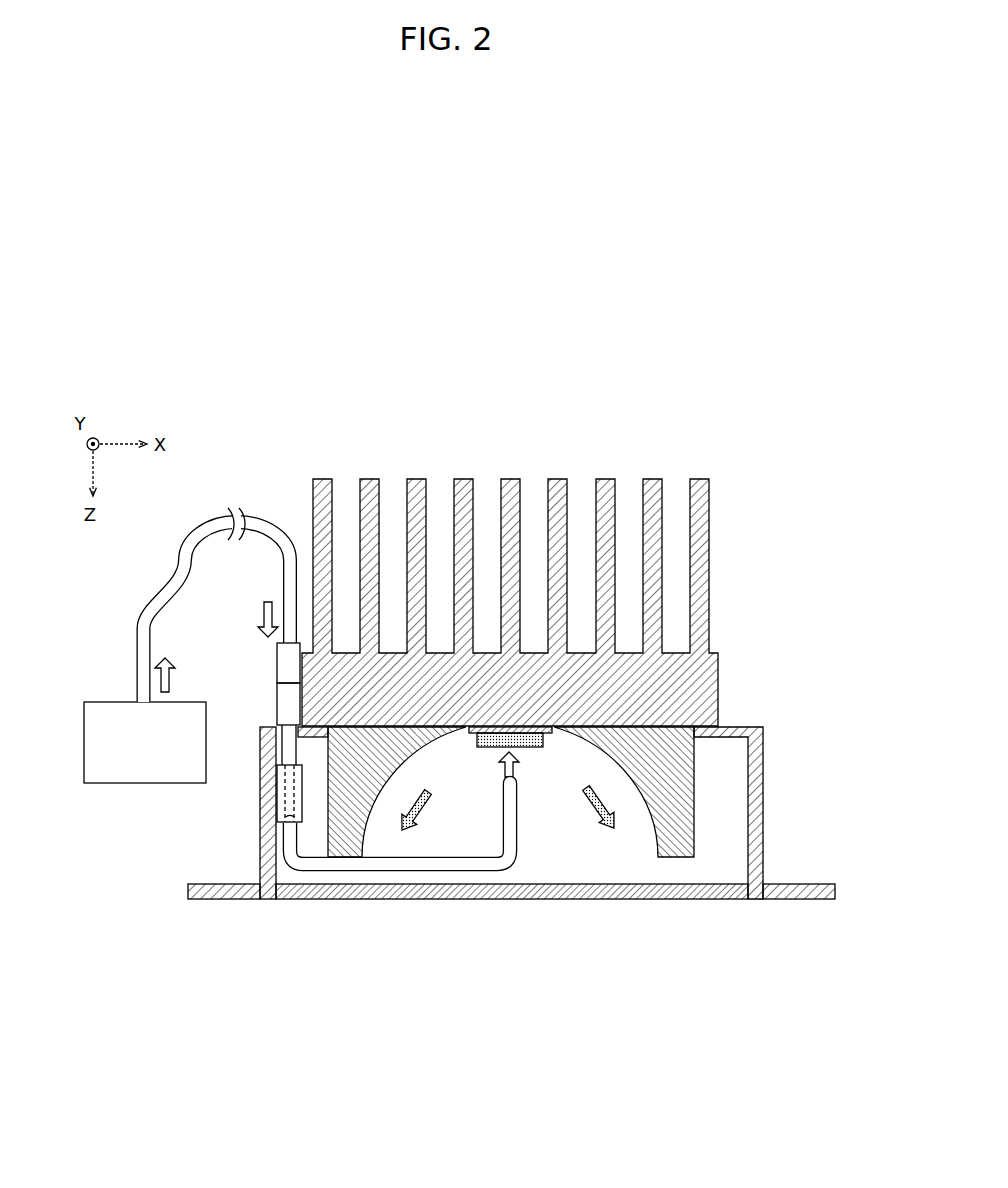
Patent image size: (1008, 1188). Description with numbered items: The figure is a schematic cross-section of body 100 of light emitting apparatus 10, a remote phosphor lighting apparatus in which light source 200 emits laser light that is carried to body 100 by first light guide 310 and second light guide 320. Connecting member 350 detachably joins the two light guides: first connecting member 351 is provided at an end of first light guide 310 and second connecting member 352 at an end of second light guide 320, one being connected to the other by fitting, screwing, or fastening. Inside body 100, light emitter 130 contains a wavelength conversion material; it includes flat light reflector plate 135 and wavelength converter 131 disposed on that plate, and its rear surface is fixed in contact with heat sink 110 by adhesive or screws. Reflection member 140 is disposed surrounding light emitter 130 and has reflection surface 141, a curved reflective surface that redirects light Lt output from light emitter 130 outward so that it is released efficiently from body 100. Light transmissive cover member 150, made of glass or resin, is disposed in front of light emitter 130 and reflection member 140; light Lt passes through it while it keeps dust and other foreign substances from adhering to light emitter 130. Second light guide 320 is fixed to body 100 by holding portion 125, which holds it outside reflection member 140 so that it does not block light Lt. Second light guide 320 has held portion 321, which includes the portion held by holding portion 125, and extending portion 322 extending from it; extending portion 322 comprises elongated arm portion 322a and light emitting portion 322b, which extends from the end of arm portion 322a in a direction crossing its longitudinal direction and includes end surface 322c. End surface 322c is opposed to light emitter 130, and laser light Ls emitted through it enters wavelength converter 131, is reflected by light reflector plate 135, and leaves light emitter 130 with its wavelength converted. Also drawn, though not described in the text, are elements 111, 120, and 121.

The light emitting apparatus 10 is at (788, 404).
The body 100 is at (554, 561).
The heat sink 110 is at (719, 677).
The heat radiating fins 111 is at (512, 496).
The housing 120 is at (524, 844).
The flange of housing 121 is at (821, 885).
The holding portion 125 is at (303, 798).
The light emitter 130 is at (530, 760).
The wavelength converter 131 is at (551, 735).
The light reflector plate 135 is at (470, 734).
The reflection member 140 is at (584, 797).
The reflection surface 141 is at (656, 826).
The cover member 150 is at (620, 899).
The light source 200 is at (99, 702).
The first light guide 310 is at (177, 553).
The second light guide 320 is at (424, 876).
The held portion 321 is at (295, 833).
The extending portion 322 is at (427, 905).
The arm portion 322a is at (403, 871).
The light emitting portion 322b is at (480, 872).
The end surface 322c is at (517, 786).
The connecting member 350 is at (248, 658).
The first connecting member 351 is at (277, 669).
The second connecting member 352 is at (277, 694).